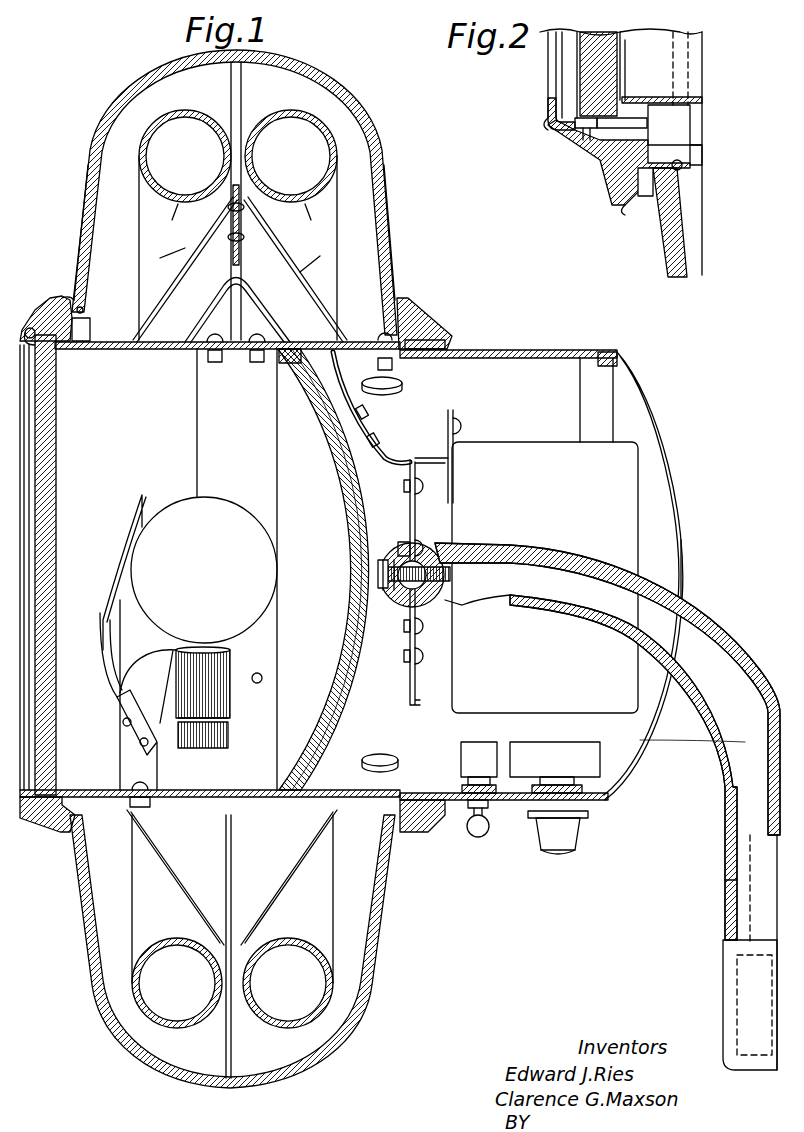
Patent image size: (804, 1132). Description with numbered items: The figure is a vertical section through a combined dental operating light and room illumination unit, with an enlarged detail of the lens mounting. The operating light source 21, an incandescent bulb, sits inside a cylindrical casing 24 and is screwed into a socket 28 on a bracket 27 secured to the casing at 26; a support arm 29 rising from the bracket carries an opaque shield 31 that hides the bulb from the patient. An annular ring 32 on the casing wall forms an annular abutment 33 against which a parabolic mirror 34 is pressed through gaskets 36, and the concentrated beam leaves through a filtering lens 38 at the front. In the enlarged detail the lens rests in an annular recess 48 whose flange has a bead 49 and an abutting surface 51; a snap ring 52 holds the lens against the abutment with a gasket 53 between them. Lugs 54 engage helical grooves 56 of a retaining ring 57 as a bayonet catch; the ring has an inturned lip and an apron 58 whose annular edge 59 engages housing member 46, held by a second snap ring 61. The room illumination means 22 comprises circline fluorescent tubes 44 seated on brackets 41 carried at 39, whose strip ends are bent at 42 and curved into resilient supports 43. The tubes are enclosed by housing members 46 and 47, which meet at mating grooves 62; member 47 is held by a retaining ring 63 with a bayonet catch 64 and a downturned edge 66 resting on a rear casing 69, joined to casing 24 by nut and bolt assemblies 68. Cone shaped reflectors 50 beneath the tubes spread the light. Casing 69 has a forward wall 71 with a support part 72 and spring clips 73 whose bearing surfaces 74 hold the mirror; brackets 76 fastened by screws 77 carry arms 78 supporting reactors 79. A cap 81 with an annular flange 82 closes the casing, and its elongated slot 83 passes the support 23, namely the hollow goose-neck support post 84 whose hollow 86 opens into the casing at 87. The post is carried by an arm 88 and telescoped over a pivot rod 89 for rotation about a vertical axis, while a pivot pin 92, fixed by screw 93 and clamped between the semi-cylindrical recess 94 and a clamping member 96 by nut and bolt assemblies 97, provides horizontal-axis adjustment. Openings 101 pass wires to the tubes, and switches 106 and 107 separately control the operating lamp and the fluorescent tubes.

In FIG. 1, the light source 21 is at (222, 502).
In FIG. 1, the means for providing general room illumination 22 is at (300, 76).
In FIG. 1, the support 23 is at (700, 612).
In FIG. 1, the casing 24 is at (184, 798).
In FIG. 1, the securing point 26 is at (135, 785).
In FIG. 1, the bracket 27 is at (125, 745).
In FIG. 1, the socket 28 is at (232, 690).
In FIG. 1, the support arm 29 is at (100, 640).
In FIG. 1, the opaque shield 31 is at (140, 500).
In FIG. 1, the annular ring 32 is at (235, 790).
In FIG. 1, the annular abutment 33 is at (266, 798).
In FIG. 1, the mirror 34 is at (345, 632).
In FIG. 1, the gaskets 36 is at (296, 343).
In FIG. 1, the filtering lens 38 is at (50, 440).
In FIG. 2, the filtering lens 38 is at (605, 55).
In FIG. 1, the bracket mounting 39 is at (270, 330).
In FIG. 1, the brackets 41 is at (243, 268).
In FIG. 1, the bent ends 42 is at (243, 140).
In FIG. 1, the supports 43 is at (240, 219).
In FIG. 1, the light sources 44 is at (190, 110).
In FIG. 1, the housing member 46 is at (118, 94).
In FIG. 2, the housing member 46 is at (668, 268).
In FIG. 1, the housing member 47 is at (396, 242).
In FIG. 2, the annular recess 48 is at (578, 140).
In FIG. 2, the bead 49 is at (565, 132).
In FIG. 1, the cone shaped reflectors 50 is at (205, 258).
In FIG. 2, the annular abutting surface 51 is at (636, 104).
In FIG. 1, the snap ring 52 is at (40, 395).
In FIG. 2, the snap ring 52 is at (556, 60).
In FIG. 2, the gasket 53 is at (622, 98).
In FIG. 1, the lugs 54 is at (40, 815).
In FIG. 2, the lugs 54 is at (675, 153).
In FIG. 2, the helical grooves 56 is at (608, 150).
In FIG. 1, the retaining ring 57 is at (45, 315).
In FIG. 2, the retaining ring 57 is at (622, 170).
In FIG. 1, the inturned lip and apron 58 is at (70, 298).
In FIG. 2, the inturned lip and apron 58 is at (545, 113).
In FIG. 1, the annular edge 59 is at (84, 304).
In FIG. 2, the annular edge 59 is at (682, 185).
In FIG. 1, the snap ring 61 is at (90, 325).
In FIG. 2, the snap ring 61 is at (697, 168).
In FIG. 1, the mating grooves 62 is at (230, 1088).
In FIG. 1, the retaining ring 63 is at (425, 322).
In FIG. 1, the bayonet catch 64 is at (418, 800).
In FIG. 1, the downturned annular edge 66 is at (452, 343).
In FIG. 1, the nut and bolt assemblies 68 is at (385, 338).
In FIG. 1, the casing 69 is at (525, 350).
In FIG. 1, the forward wall 71 is at (380, 421).
In FIG. 1, the support part 72 is at (400, 652).
In FIG. 1, the spring clips 73 is at (360, 452).
In FIG. 1, the bearing surfaces 74 is at (338, 440).
In FIG. 1, the brackets 76 is at (430, 457).
In FIG. 1, the screws 77 is at (462, 424).
In FIG. 1, the arms 78 is at (448, 478).
In FIG. 1, the reactors 79 is at (545, 577).
In FIG. 1, the cap 81 is at (658, 415).
In FIG. 1, the annular flange 82 is at (597, 362).
In FIG. 1, the elongated slot 83 is at (684, 540).
In FIG. 1, the support post 84 is at (722, 800).
In FIG. 1, the hollow 86 is at (745, 742).
In FIG. 1, the opening 87 is at (495, 600).
In FIG. 1, the arm 88 is at (722, 978).
In FIG. 1, the pivot rod 89 is at (745, 870).
In FIG. 1, the pivot pin 92 is at (425, 565).
In FIG. 1, the screw 93 is at (395, 590).
In FIG. 1, the semi-cylindrical recess 94 is at (400, 545).
In FIG. 1, the clamping member 96 is at (445, 560).
In FIG. 1, the nut and bolt assemblies 97 is at (430, 630).
In FIG. 1, the openings 101 is at (403, 382).
In FIG. 1, the switch 106 is at (475, 832).
In FIG. 1, the switch 107 is at (557, 850).